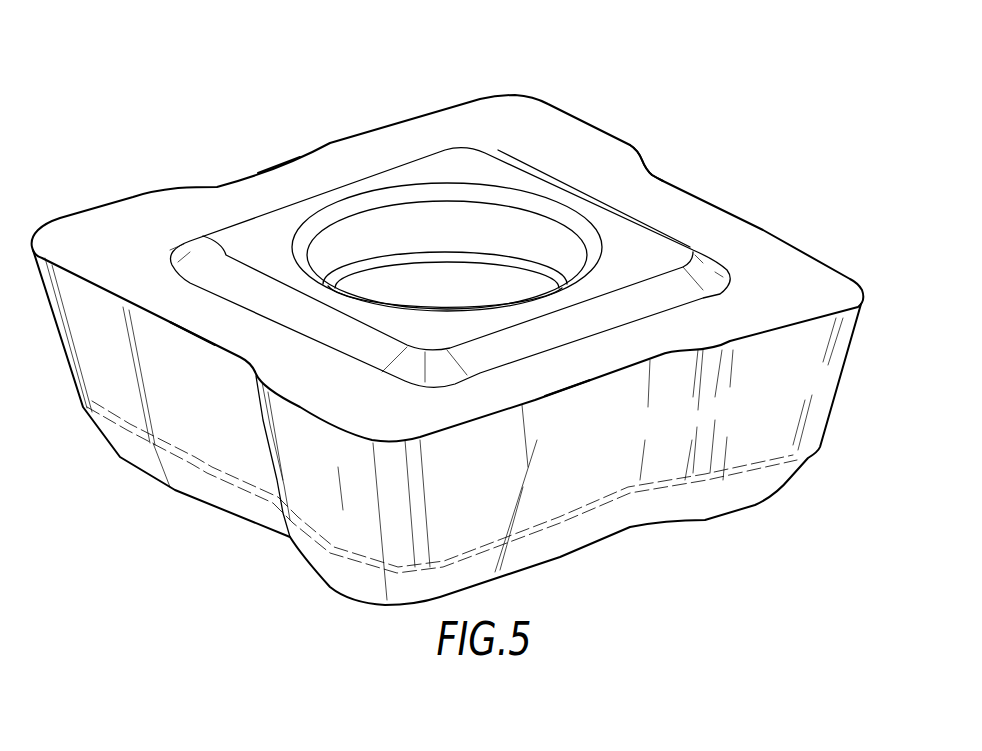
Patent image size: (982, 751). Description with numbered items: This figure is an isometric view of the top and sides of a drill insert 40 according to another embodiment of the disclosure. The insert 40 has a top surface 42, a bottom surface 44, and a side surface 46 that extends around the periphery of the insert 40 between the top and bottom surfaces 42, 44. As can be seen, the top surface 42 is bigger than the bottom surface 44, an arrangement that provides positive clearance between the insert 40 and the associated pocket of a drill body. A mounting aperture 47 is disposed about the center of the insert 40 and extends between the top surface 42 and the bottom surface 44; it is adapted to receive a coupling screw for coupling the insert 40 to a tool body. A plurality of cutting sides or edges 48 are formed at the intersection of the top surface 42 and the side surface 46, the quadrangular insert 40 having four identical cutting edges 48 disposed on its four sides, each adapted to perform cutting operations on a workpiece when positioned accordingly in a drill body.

The insert 40 is at (620, 101).
The top surface 42 is at (134, 216).
The bottom surface 44 is at (337, 586).
The side surface 46 is at (797, 421).
The mounting aperture 47 is at (370, 233).
The cutting edges 48 is at (277, 158).